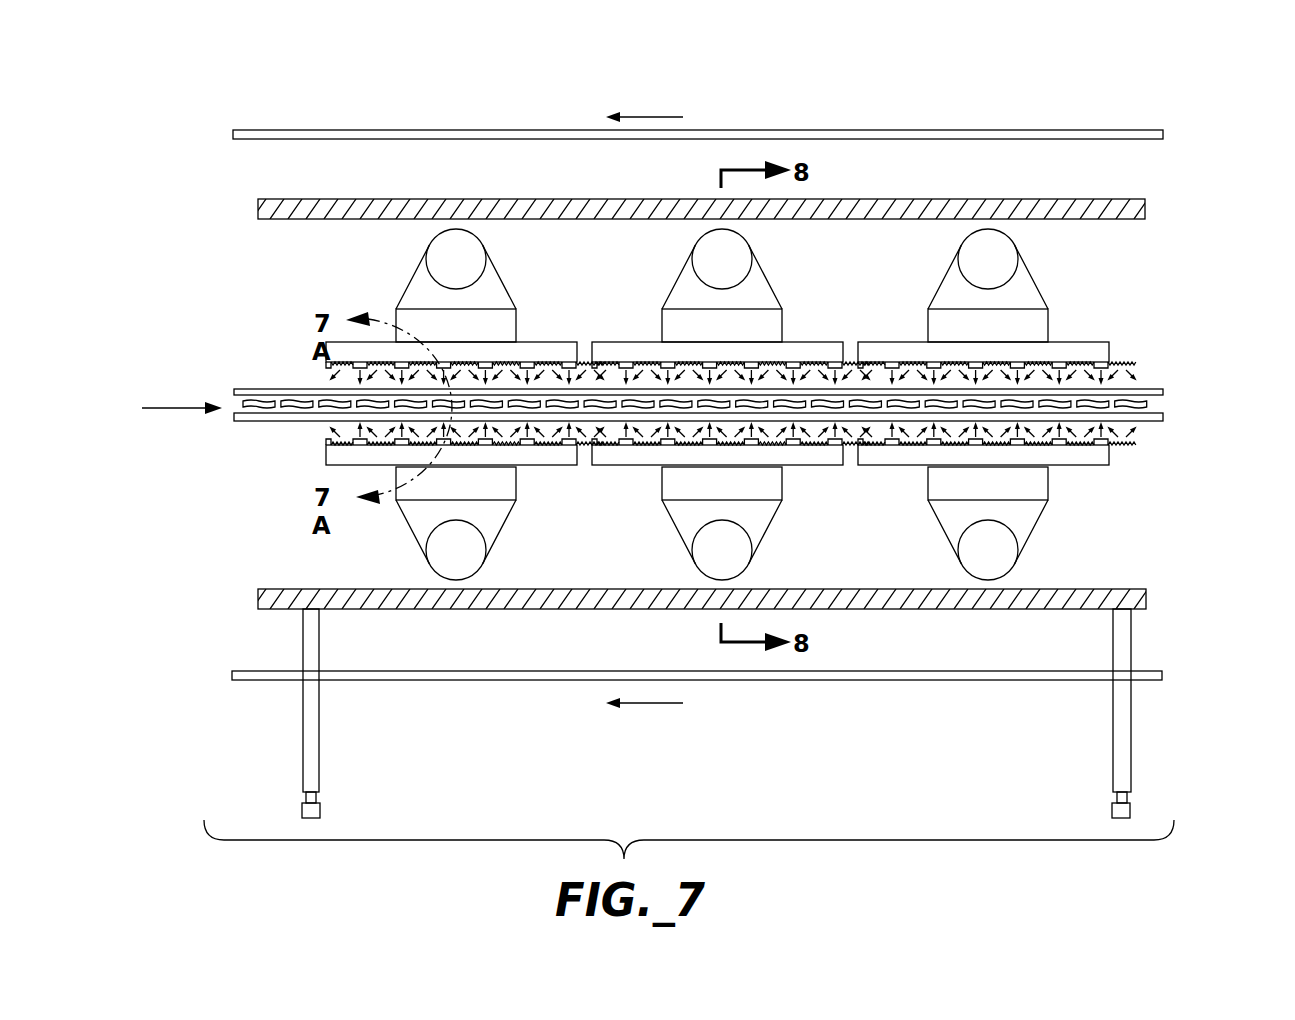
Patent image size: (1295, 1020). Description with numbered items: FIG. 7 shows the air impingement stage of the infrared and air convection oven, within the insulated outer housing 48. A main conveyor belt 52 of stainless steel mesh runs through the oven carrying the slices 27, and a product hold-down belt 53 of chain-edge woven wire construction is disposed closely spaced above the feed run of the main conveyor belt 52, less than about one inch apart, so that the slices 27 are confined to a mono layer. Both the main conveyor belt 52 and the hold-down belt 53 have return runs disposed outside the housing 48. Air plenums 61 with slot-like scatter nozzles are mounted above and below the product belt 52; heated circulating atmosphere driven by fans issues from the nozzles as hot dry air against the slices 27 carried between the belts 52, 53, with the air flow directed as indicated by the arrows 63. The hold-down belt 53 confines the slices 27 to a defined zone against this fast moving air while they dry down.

The slice 27 is at (242, 405).
The insulated outer housing 48 is at (1145, 219).
The main conveyor belt 52 is at (1150, 422).
The product hold-down belt 53 is at (1108, 129).
The air plenum 61 is at (411, 281).
The arrows 63 is at (1100, 378).